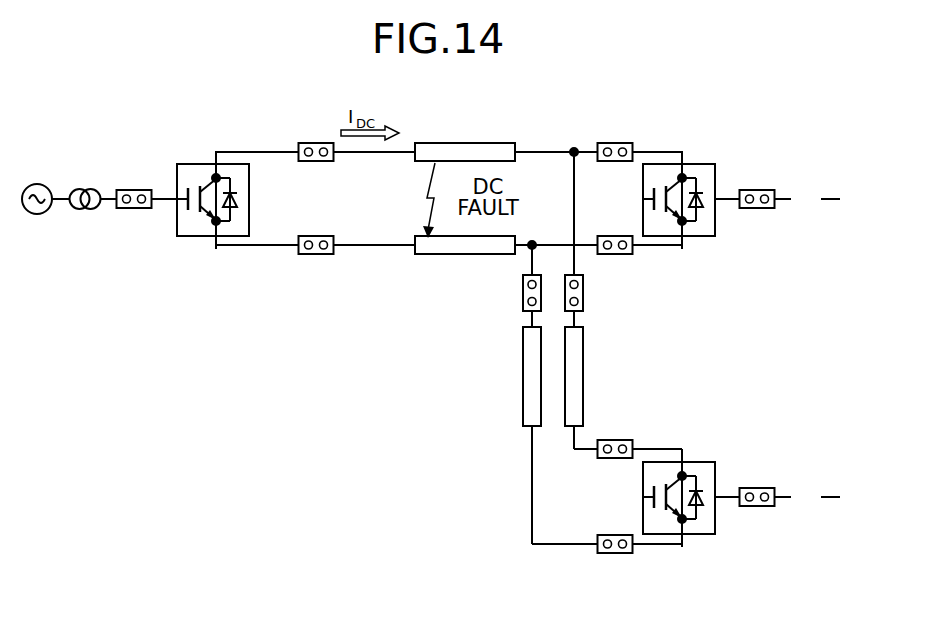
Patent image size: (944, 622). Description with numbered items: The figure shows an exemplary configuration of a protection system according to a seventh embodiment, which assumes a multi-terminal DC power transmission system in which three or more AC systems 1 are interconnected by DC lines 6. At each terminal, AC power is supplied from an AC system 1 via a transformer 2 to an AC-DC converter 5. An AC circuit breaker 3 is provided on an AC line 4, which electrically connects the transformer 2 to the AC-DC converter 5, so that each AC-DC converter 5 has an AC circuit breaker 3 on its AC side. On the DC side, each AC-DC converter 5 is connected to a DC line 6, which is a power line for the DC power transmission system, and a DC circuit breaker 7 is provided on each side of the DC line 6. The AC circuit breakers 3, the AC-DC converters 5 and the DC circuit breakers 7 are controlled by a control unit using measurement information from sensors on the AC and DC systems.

The AC system 1 is at (36, 183).
The transformer 2 is at (81, 209).
The AC circuit breaker 3 is at (126, 189).
The AC line 4 is at (161, 202).
The AC-DC converter 5 is at (187, 163).
The DC line 6 is at (441, 143).
The DC circuit breaker 7 is at (306, 143).